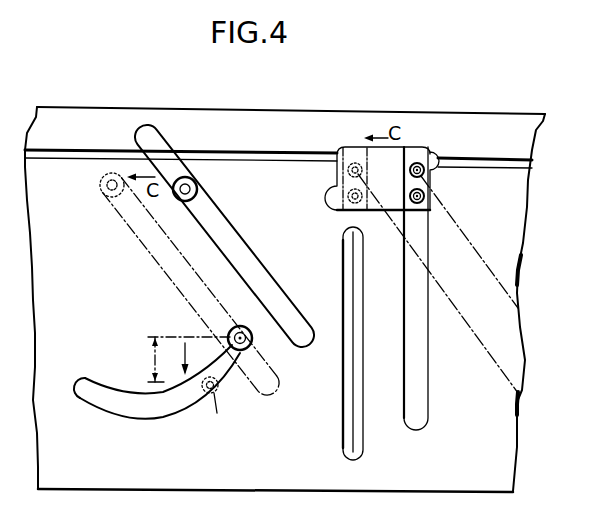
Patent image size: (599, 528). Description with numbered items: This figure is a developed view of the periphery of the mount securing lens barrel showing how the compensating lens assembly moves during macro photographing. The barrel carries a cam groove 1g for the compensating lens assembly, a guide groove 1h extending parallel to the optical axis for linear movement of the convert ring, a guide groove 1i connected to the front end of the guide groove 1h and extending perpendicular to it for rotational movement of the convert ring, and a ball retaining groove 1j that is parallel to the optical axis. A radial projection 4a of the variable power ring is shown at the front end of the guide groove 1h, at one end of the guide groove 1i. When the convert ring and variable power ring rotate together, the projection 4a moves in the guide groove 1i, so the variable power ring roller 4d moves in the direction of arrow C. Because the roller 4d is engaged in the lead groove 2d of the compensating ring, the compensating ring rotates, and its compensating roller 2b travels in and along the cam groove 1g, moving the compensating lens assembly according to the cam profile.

The radial projections 4a is at (355, 146).
The variable power ring rollers 4d is at (101, 190).
The lead grooves 2d is at (233, 239).
The compensating rollers 2b is at (232, 350).
The cam groove 1g is at (163, 409).
The guide grooves 1h is at (421, 351).
The guide grooves 1i is at (392, 203).
The ball retaining groove 1j is at (344, 385).